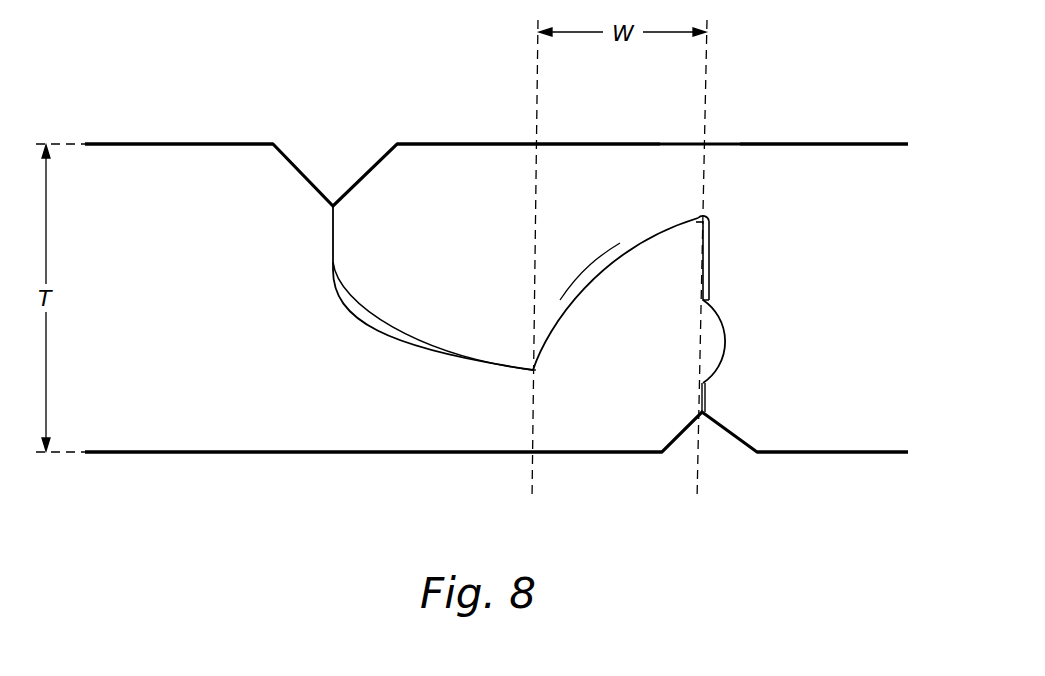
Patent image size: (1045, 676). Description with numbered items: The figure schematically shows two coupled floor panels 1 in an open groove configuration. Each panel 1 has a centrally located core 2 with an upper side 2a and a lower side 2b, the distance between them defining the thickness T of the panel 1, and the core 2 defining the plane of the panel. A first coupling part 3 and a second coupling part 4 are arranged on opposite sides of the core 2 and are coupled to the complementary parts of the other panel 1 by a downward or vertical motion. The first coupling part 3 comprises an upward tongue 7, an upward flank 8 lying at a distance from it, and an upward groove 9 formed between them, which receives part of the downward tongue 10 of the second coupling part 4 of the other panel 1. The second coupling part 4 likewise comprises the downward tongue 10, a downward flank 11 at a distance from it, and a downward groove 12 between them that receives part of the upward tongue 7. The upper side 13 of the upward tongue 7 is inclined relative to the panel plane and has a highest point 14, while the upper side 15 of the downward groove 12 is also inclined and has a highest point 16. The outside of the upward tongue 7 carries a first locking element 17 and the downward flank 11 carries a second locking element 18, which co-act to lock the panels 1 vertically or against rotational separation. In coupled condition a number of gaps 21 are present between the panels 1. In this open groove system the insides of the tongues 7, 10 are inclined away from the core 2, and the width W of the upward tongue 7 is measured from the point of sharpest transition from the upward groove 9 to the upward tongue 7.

The panel 1 is at (200, 138).
The core 2 is at (521, 298).
The upper side 2a is at (122, 143).
The lower side 2b is at (120, 452).
The first coupling part 3 is at (491, 454).
The second coupling part 4 is at (508, 140).
The upward tongue 7 is at (628, 362).
The upward flank 8 is at (335, 287).
The upward groove 9 is at (375, 330).
The downward tongue 10 is at (453, 322).
The downward flank 11 is at (710, 266).
The downward groove 12 is at (700, 220).
The upper side of the upward tongue 13 is at (607, 265).
The highest point of the upward tongue 14 is at (696, 228).
The upper side of the downward groove 15 is at (628, 248).
The highest point of the downward groove 16 is at (710, 221).
The first locking element 17 is at (706, 343).
The second locking element 18 is at (723, 327).
The gap 21 is at (347, 312).